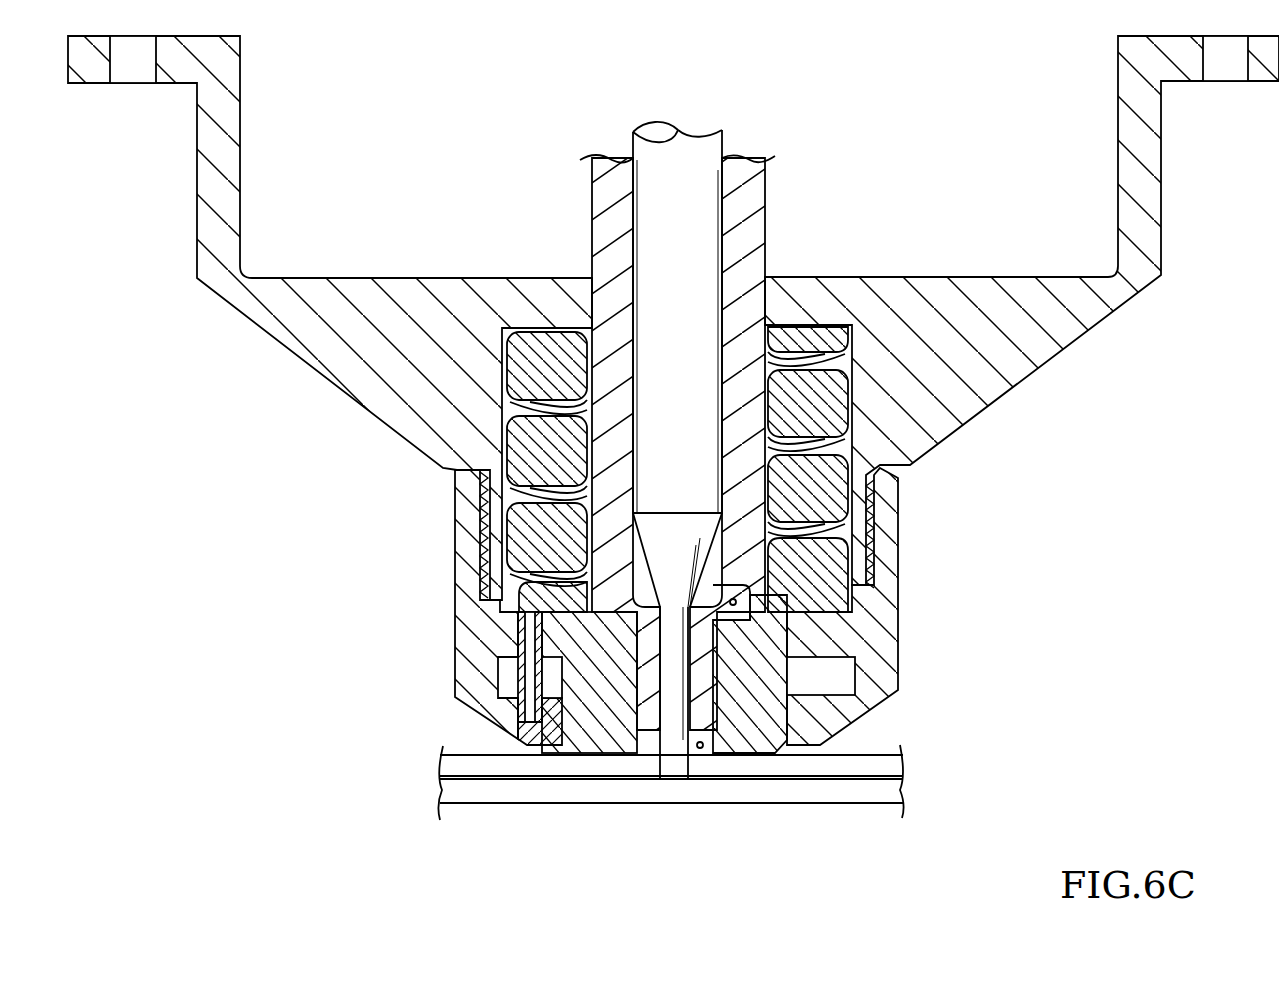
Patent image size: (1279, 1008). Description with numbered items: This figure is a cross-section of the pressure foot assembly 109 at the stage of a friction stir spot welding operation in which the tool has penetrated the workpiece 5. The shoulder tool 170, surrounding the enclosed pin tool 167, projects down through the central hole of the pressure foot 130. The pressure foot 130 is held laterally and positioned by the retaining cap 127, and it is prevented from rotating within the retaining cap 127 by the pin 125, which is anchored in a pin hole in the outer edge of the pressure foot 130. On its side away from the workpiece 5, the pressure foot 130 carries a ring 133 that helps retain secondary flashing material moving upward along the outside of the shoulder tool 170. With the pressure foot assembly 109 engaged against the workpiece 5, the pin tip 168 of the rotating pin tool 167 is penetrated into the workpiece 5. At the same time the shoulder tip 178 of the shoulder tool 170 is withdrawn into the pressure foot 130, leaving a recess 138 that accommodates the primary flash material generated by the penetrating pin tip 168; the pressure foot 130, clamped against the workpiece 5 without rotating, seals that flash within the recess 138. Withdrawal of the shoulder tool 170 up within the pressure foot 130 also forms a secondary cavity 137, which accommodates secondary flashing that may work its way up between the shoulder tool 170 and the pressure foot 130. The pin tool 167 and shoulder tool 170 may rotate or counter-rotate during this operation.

The workpiece 5 is at (488, 806).
The pressure foot assembly 109 is at (1148, 437).
The pin 125 is at (523, 722).
The retaining cap 127 is at (898, 518).
The pressure foot 130 is at (835, 670).
The ring 133 is at (632, 600).
The secondary cavity 137 is at (755, 605).
The recess 138 is at (703, 750).
The pin tool 167 is at (665, 126).
The pin tip 168 is at (672, 780).
The shoulder tool 170 is at (745, 158).
The shoulder tip 178 is at (648, 733).